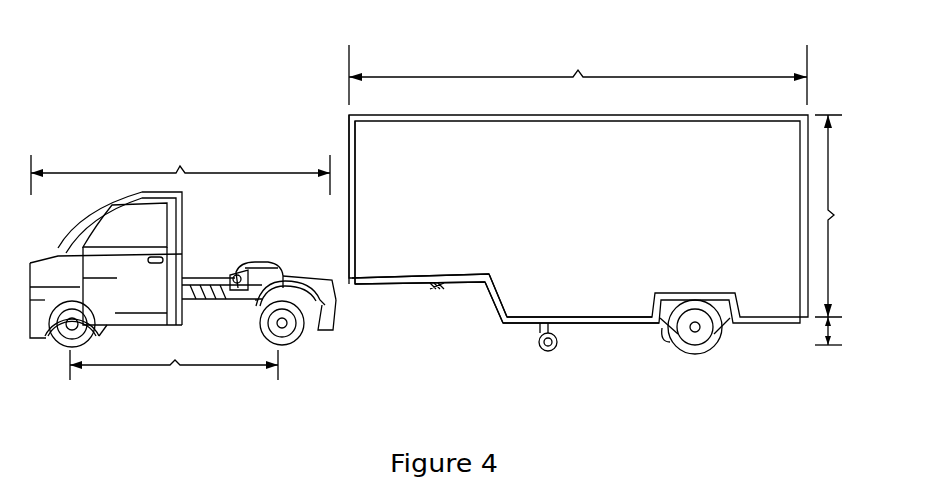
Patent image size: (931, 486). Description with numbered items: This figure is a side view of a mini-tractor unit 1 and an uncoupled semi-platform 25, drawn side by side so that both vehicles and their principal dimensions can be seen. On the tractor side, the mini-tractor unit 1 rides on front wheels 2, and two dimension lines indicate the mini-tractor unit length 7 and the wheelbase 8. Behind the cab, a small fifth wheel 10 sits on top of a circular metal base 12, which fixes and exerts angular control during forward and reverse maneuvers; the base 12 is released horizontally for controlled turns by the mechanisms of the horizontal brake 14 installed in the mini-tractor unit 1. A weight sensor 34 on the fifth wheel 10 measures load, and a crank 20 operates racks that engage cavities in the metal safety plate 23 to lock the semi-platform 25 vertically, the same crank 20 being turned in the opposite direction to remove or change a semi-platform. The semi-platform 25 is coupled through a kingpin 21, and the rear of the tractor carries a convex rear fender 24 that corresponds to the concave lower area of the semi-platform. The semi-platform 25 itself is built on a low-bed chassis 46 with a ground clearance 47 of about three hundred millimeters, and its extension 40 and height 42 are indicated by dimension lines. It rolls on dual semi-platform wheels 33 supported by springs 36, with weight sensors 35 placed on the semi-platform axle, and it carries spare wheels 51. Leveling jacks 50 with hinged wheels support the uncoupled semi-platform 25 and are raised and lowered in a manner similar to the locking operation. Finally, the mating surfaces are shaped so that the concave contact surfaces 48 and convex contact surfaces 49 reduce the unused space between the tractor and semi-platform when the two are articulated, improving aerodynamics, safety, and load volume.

The mini-tractor unit 1 is at (98, 133).
The front wheels 2 is at (52, 343).
The mini-tractor unit length 7 is at (180, 171).
The wheelbase 8 is at (174, 372).
The fifth wheel 10 is at (236, 275).
The base 12 is at (283, 279).
The horizontal brake 14 is at (249, 263).
The crank 20 is at (222, 281).
The kingpin 21 is at (440, 290).
The safety plate 23 is at (397, 284).
The convex rear fender 24 is at (322, 318).
The semi-platform 25 is at (698, 33).
The dual semi-platform wheels 33 is at (717, 347).
The weight sensor 34 is at (235, 277).
The weight sensors 35 is at (662, 330).
The springs 36 is at (733, 331).
The extension 40 is at (578, 73).
The height 42 is at (839, 216).
The low-bed chassis 46 is at (505, 298).
The ground clearance 47 is at (838, 332).
The concave contact surfaces 48 is at (497, 325).
The convex contact surfaces 49 is at (355, 124).
The levelling jacks 50 is at (551, 344).
The spare wheels 51 is at (288, 342).